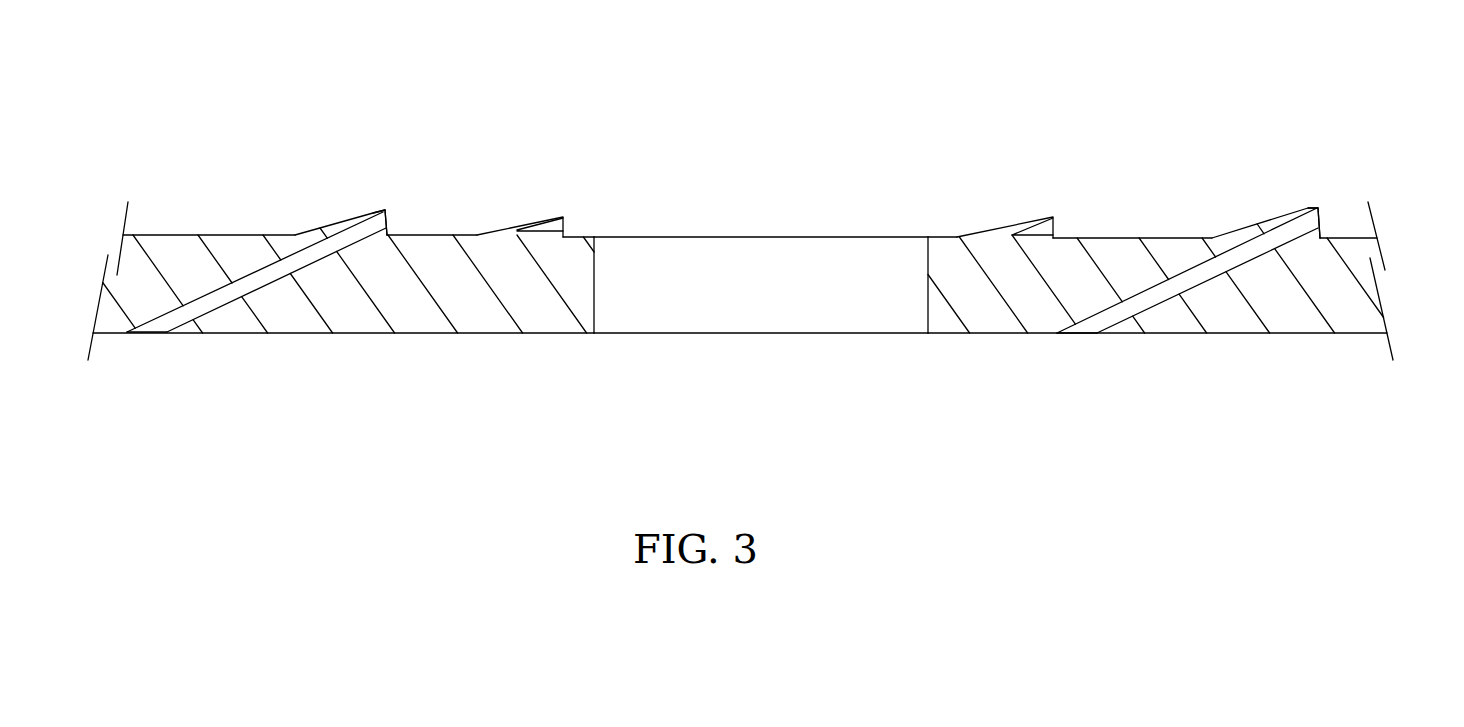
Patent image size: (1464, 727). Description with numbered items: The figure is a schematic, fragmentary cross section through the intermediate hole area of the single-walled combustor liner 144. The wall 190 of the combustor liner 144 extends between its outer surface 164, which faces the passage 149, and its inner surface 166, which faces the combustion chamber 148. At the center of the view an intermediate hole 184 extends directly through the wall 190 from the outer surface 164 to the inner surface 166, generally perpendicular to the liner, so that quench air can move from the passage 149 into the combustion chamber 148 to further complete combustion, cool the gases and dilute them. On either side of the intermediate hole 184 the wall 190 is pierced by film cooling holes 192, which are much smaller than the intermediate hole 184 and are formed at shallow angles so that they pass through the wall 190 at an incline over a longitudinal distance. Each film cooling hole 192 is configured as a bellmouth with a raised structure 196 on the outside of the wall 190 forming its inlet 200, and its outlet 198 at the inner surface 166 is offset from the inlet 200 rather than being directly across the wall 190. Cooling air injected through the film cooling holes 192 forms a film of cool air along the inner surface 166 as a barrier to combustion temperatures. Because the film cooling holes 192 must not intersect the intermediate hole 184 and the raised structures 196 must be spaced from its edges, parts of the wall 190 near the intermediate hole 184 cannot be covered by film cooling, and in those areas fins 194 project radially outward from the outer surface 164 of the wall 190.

The combustor liner 144 is at (443, 141).
The combustion chamber 148 is at (808, 416).
The passage 149 is at (847, 222).
The outer surface 164 is at (440, 234).
The inner surface 166 is at (373, 333).
The intermediate hole 184 is at (658, 308).
The wall 190 is at (182, 245).
The film cooling hole 192 is at (263, 272).
The fin 194 is at (542, 218).
The raised structure 196 is at (360, 211).
The outlet 198 is at (152, 333).
The inlet 200 is at (388, 224).